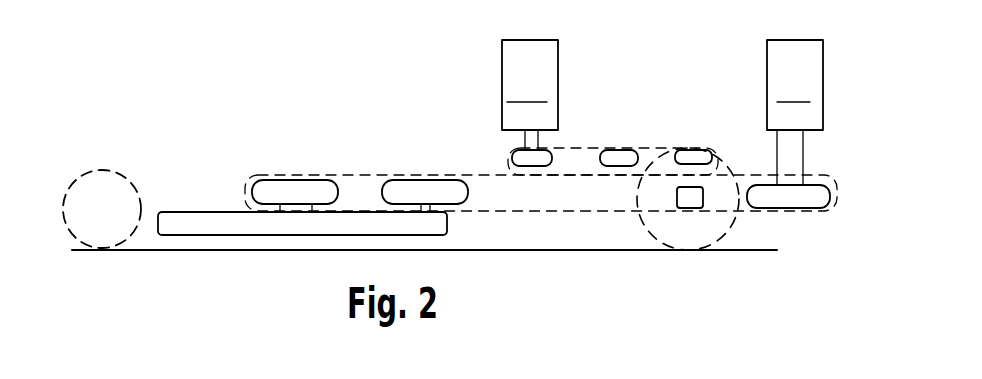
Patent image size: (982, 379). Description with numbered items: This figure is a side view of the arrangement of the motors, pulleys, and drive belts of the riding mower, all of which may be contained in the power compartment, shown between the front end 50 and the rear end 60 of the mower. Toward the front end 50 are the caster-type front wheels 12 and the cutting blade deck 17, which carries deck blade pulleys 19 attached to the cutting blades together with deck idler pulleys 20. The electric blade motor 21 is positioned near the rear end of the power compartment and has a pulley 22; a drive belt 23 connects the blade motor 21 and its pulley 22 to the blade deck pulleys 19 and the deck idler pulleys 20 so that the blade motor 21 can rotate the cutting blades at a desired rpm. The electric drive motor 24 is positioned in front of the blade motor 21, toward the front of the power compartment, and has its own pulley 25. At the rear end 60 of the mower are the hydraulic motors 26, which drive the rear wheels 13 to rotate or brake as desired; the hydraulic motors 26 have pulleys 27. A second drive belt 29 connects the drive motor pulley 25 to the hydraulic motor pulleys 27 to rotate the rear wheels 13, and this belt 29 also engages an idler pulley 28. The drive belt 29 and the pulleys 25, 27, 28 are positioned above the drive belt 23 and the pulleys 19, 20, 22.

The front wheels 12 is at (108, 192).
The rear wheels 13 is at (718, 224).
The cutting blade deck 17 is at (178, 227).
The deck blade pulley 19 is at (288, 190).
The deck idler pulley 20 is at (423, 190).
The electric blade motor 21 is at (795, 112).
The pulley 22 is at (770, 197).
The drive belt 23 is at (558, 213).
The electric drive motor 24 is at (530, 95).
The pulley 25 is at (542, 158).
The hydraulic motors 26 is at (688, 210).
The pulleys 27 is at (688, 153).
The idler pulley 28 is at (617, 155).
The drive belt 29 is at (510, 153).
The front end 50 is at (110, 129).
The rear end 60 is at (836, 264).